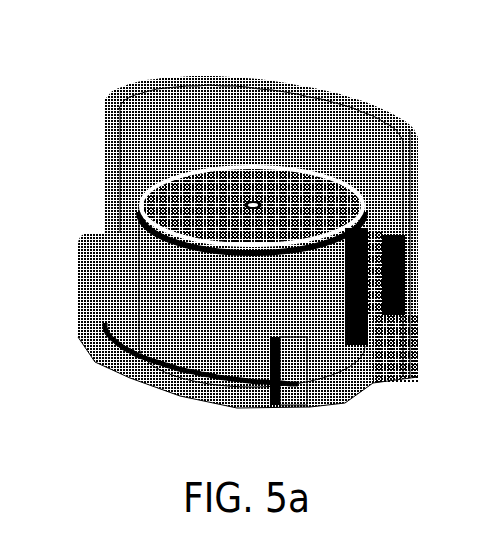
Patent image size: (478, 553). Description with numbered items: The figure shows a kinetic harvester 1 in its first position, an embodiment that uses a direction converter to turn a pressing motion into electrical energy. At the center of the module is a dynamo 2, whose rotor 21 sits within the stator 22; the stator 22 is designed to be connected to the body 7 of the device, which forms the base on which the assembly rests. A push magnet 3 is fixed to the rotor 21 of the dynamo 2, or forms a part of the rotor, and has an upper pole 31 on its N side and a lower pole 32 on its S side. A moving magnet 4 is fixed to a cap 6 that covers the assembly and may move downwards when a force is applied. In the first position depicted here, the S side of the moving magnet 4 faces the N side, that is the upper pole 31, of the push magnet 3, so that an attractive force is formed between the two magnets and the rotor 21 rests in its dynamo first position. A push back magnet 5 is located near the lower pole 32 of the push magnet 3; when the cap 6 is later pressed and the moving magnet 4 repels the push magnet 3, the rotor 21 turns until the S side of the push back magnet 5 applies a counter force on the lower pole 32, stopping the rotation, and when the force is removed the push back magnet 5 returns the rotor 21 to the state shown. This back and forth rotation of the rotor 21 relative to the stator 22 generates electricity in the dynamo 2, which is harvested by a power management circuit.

The kinetic harvester 1 is at (134, 57).
The dynamo 2 is at (281, 186).
The push magnet 3 is at (367, 333).
The moving magnet 4 is at (406, 249).
The push back magnet 5 is at (317, 379).
The cap 6 is at (352, 108).
The body 7 is at (238, 398).
The rotor 21 is at (174, 267).
The stator 22 is at (175, 210).
The upper pole 31 is at (337, 278).
The lower pole 32 is at (333, 312).